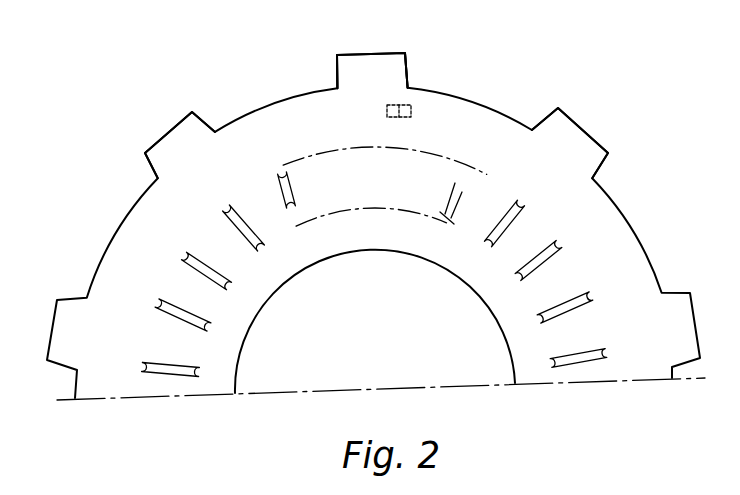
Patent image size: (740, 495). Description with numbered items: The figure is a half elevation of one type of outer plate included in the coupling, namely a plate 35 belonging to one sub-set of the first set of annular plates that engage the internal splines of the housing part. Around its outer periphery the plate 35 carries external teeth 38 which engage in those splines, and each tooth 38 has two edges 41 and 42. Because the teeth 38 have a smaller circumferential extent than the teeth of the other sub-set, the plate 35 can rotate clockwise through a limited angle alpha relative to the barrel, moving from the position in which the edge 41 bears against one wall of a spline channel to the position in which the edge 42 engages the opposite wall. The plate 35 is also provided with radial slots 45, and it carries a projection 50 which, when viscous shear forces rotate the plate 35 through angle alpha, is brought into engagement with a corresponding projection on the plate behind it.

The plate 35 is at (133, 228).
The external teeth 38 is at (383, 55).
The edge 41 is at (336, 63).
The edge 42 is at (408, 57).
The radial slots 45 is at (277, 182).
The projection 50 is at (388, 112).